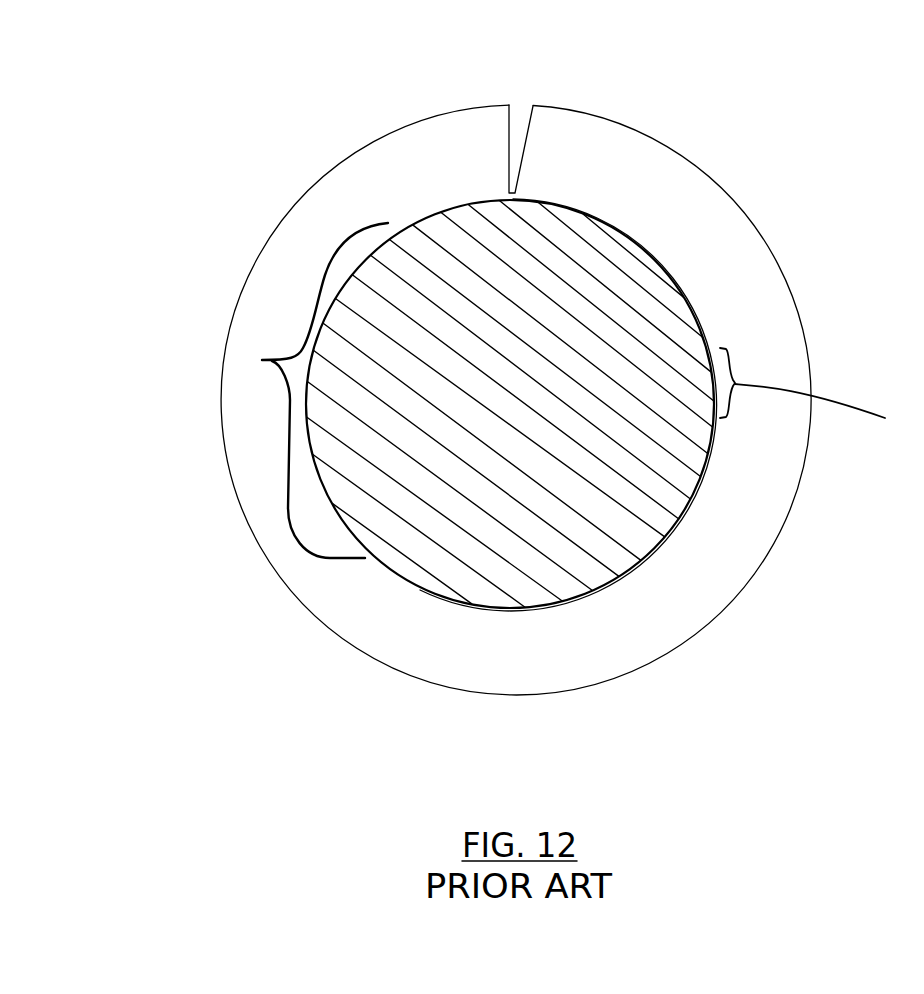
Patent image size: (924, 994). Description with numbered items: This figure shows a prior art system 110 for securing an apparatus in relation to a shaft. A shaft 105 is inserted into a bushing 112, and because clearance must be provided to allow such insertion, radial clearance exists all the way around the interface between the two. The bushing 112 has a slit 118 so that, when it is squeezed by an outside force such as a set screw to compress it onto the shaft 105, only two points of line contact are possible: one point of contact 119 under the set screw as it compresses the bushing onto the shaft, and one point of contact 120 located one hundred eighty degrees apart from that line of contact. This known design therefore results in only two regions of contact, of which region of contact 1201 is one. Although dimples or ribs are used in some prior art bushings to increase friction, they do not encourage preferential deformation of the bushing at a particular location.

The sleeve assembly 110 is at (769, 254).
The outer sleeve / ring 112 is at (670, 172).
The slot 118 is at (515, 120).
The optical fiber / core 105 is at (382, 523).
The region of contact 1201 is at (262, 360).
The point of contact 120 is at (305, 393).
The point of contact 119 is at (713, 378).